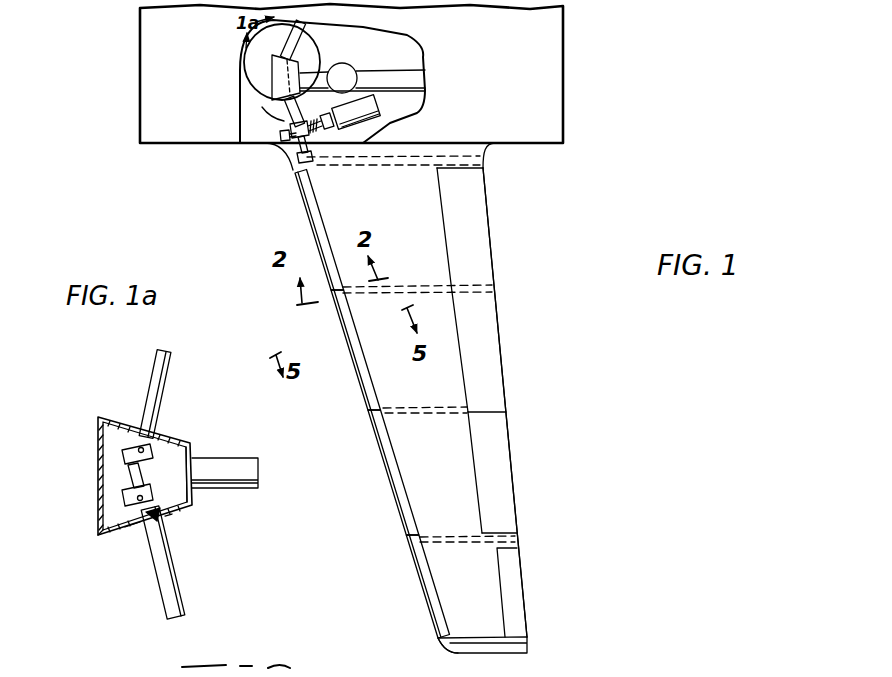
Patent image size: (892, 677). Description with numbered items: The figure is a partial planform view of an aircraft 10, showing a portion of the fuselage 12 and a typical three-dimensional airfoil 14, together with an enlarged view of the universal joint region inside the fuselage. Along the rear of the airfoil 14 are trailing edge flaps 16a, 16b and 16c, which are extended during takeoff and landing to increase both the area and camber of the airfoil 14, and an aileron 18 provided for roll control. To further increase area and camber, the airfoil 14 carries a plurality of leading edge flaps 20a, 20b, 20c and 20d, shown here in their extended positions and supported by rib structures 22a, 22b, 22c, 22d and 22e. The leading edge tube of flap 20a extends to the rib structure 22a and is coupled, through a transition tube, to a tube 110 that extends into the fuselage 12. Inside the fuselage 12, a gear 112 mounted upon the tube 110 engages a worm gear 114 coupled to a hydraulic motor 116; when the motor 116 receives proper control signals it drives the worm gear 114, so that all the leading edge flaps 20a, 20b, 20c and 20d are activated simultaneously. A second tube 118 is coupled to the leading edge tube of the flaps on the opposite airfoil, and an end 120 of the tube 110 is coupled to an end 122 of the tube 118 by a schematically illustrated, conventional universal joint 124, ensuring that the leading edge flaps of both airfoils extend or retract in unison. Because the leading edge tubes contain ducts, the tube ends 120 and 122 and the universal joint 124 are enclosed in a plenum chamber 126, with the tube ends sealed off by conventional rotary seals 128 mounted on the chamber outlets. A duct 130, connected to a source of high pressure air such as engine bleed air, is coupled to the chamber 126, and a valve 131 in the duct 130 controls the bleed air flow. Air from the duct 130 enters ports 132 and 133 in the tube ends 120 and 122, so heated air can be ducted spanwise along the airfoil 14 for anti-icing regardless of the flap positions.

In FIG. 1, the aircraft 10 is at (565, 230).
In FIG. 1, the fuselage 12 is at (563, 129).
In FIG. 1, the airfoil 14 is at (511, 446).
In FIG. 1, the trailing edge flap 16a is at (493, 268).
In FIG. 1, the trailing edge flap 16b is at (505, 390).
In FIG. 1, the trailing edge flap 16c is at (513, 485).
In FIG. 1, the aileron 18 is at (528, 606).
In FIG. 1, the leading edge flap 20a is at (312, 228).
In FIG. 1, the leading edge flap 20b is at (367, 398).
In FIG. 1, the leading edge flap 20c is at (390, 478).
In FIG. 1, the leading edge flap 20d is at (425, 582).
In FIG. 1, the rib structure 22a is at (485, 166).
In FIG. 1, the rib structure 22b is at (494, 291).
In FIG. 1, the rib structure 22c is at (402, 417).
In FIG. 1, the rib structure 22d is at (410, 533).
In FIG. 1, the rib structure 22e is at (443, 641).
In FIG. 1, the tube 110 is at (293, 158).
In FIG. 1A, the tube 110 is at (172, 585).
In FIG. 1, the gear 112 is at (262, 107).
In FIG. 1, the worm gear 114 is at (285, 130).
In FIG. 1, the hydraulic motor 116 is at (381, 113).
In FIG. 1, the tube 118 is at (303, 37).
In FIG. 1A, the tube 118 is at (168, 360).
In FIG. 1A, the end of tube 110 120 is at (103, 532).
In FIG. 1A, the end of tube 118 122 is at (191, 443).
In FIG. 1, the universal joint 124 is at (270, 75).
In FIG. 1A, the universal joint 124 is at (112, 464).
In FIG. 1A, the plenum chamber 126 is at (172, 490).
In FIG. 1A, the rotary seals 128 is at (132, 533).
In FIG. 1, the duct 130 is at (410, 72).
In FIG. 1A, the duct 130 is at (245, 475).
In FIG. 1, the valve 131 is at (350, 72).
In FIG. 1A, the port 132 is at (172, 518).
In FIG. 1A, the port 133 is at (150, 448).